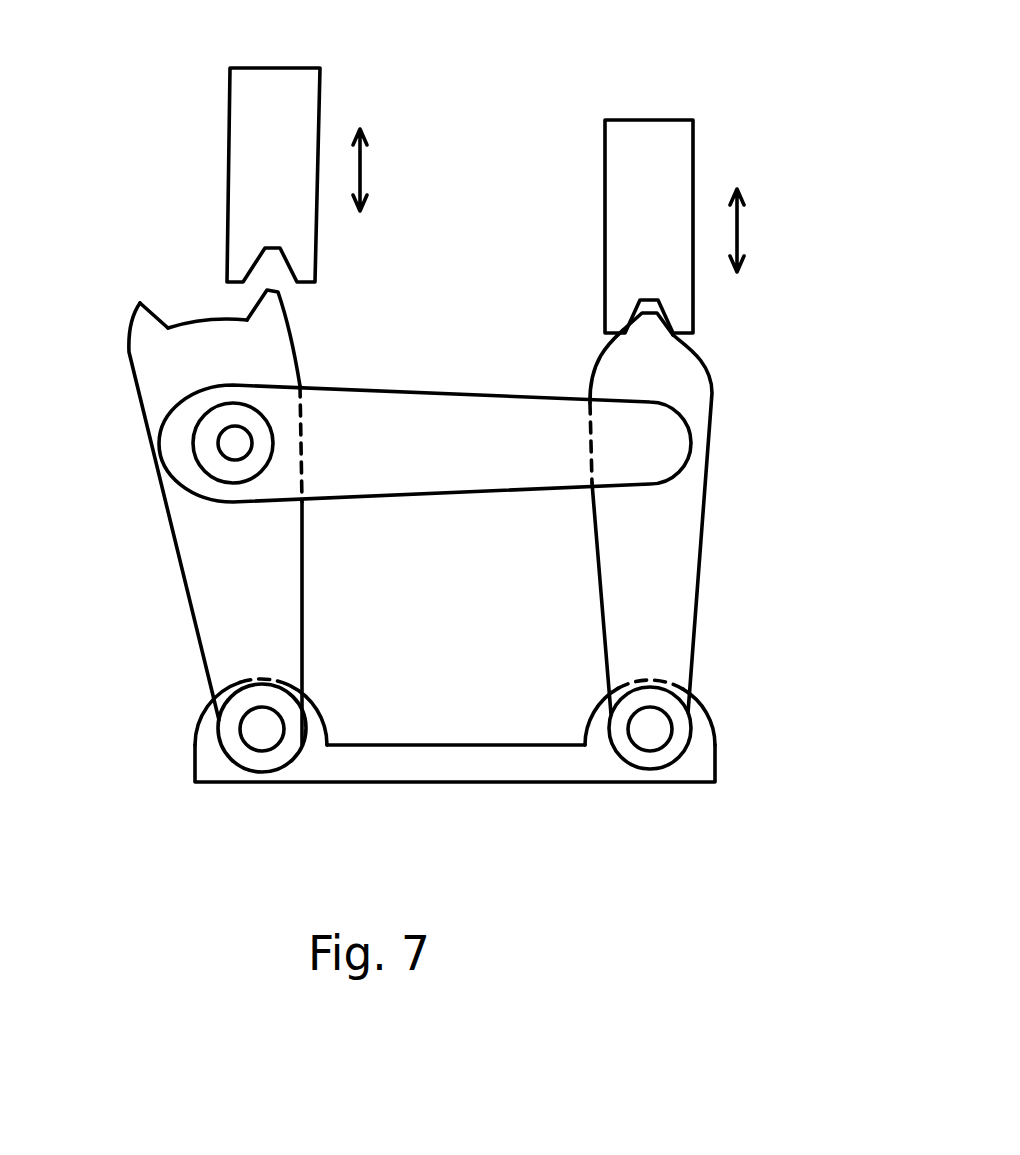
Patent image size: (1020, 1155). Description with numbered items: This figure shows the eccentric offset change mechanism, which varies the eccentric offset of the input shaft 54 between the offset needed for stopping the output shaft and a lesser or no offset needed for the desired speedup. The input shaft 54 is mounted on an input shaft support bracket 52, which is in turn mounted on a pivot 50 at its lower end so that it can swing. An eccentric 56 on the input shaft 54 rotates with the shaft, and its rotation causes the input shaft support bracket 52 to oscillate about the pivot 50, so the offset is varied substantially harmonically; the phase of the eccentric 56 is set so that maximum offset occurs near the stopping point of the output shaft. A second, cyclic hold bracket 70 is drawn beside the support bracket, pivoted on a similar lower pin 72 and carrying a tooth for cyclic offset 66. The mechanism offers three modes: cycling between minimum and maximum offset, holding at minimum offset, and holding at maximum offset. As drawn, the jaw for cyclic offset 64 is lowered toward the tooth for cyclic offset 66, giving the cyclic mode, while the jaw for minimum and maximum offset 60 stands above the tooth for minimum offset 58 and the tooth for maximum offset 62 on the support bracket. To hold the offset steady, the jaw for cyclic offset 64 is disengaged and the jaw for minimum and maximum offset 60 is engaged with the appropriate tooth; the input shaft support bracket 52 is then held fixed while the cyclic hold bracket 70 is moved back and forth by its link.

The pivot on input shaft support bracket 50 is at (240, 727).
The input shaft support bracket 52 is at (235, 490).
The input shaft 54 is at (220, 445).
The eccentric on input shaft 56 is at (369, 453).
The tooth for minimum offset 58 is at (137, 307).
The jaw for minimum and maximum offset 60 is at (320, 86).
The tooth for maximum offset 62 is at (285, 295).
The jaw for cyclic offset 64 is at (605, 210).
The tooth for cyclic offset 66 is at (673, 338).
The cyclic hold bracket 70 is at (720, 513).
The second pivot pin 72 is at (667, 718).